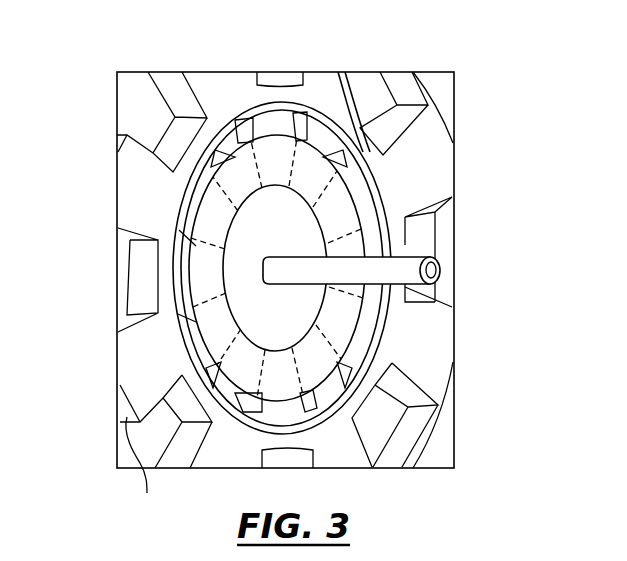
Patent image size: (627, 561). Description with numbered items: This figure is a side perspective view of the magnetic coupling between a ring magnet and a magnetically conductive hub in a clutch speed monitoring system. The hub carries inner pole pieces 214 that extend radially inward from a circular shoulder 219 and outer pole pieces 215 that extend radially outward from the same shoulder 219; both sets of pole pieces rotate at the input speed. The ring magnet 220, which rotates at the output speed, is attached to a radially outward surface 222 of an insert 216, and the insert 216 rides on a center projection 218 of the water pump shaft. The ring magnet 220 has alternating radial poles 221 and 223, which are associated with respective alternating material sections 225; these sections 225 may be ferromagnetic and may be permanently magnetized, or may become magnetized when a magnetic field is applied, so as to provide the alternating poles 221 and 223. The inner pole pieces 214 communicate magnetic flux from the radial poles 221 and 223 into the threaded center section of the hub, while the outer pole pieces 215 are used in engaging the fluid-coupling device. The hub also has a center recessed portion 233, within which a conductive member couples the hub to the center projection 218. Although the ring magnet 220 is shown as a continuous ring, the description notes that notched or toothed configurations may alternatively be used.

The inner pole pieces 214 is at (251, 207).
The outer pole pieces 215 is at (220, 450).
The insert 216 is at (253, 283).
The center projection 218 is at (442, 253).
The circular shoulder 219 is at (343, 176).
The ring magnet 220 is at (353, 218).
The radial pole 221 is at (197, 232).
The radially outward surface 222 is at (345, 290).
The radial pole 223 is at (225, 173).
The alternating material sections 225 is at (330, 145).
The center recessed portion 233 is at (343, 393).